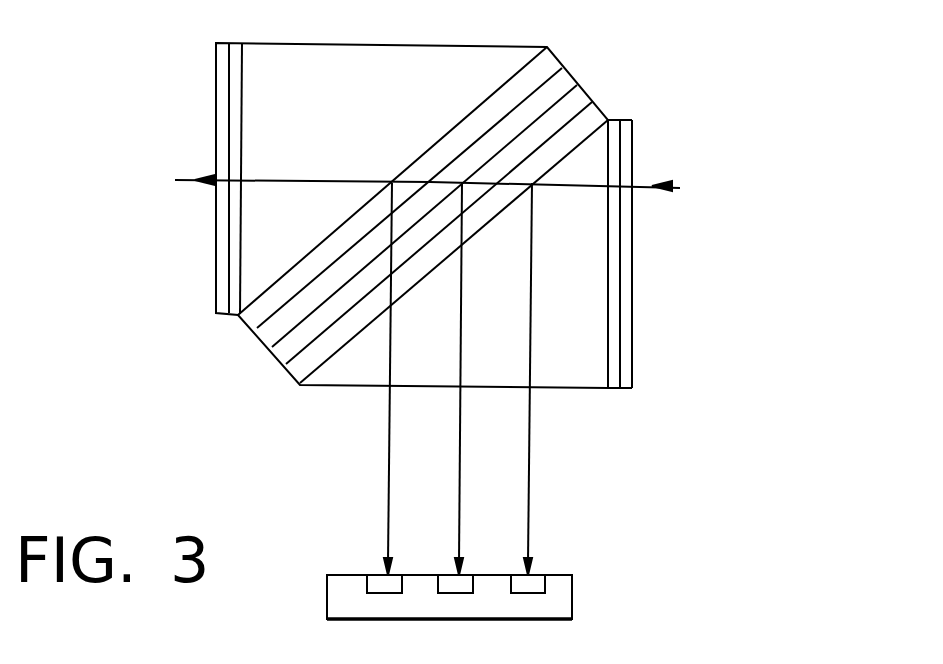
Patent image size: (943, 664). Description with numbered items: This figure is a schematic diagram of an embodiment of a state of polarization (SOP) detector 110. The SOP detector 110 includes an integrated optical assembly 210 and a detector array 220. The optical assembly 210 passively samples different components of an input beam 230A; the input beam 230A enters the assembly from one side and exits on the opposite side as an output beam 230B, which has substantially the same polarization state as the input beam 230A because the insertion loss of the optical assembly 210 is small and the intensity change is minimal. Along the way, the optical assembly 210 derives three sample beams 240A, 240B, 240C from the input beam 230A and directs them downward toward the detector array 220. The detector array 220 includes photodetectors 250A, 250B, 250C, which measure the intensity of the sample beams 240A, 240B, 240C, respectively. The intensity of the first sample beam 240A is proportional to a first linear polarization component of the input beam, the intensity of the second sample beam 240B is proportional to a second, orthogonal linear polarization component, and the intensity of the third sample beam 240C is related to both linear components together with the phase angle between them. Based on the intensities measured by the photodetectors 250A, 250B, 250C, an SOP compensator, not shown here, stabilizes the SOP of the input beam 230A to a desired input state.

The SOP detector 110 is at (660, 448).
The integrated optical assembly 210 is at (477, 47).
The detector array 220 is at (327, 600).
The input beam 230A is at (673, 184).
The output beam 230B is at (183, 178).
The sample beam 240A is at (530, 485).
The sample beam 240B is at (460, 497).
The sample beam 240C is at (388, 442).
The photodetector 250A is at (535, 581).
The photodetector 250B is at (447, 579).
The photodetector 250C is at (376, 579).